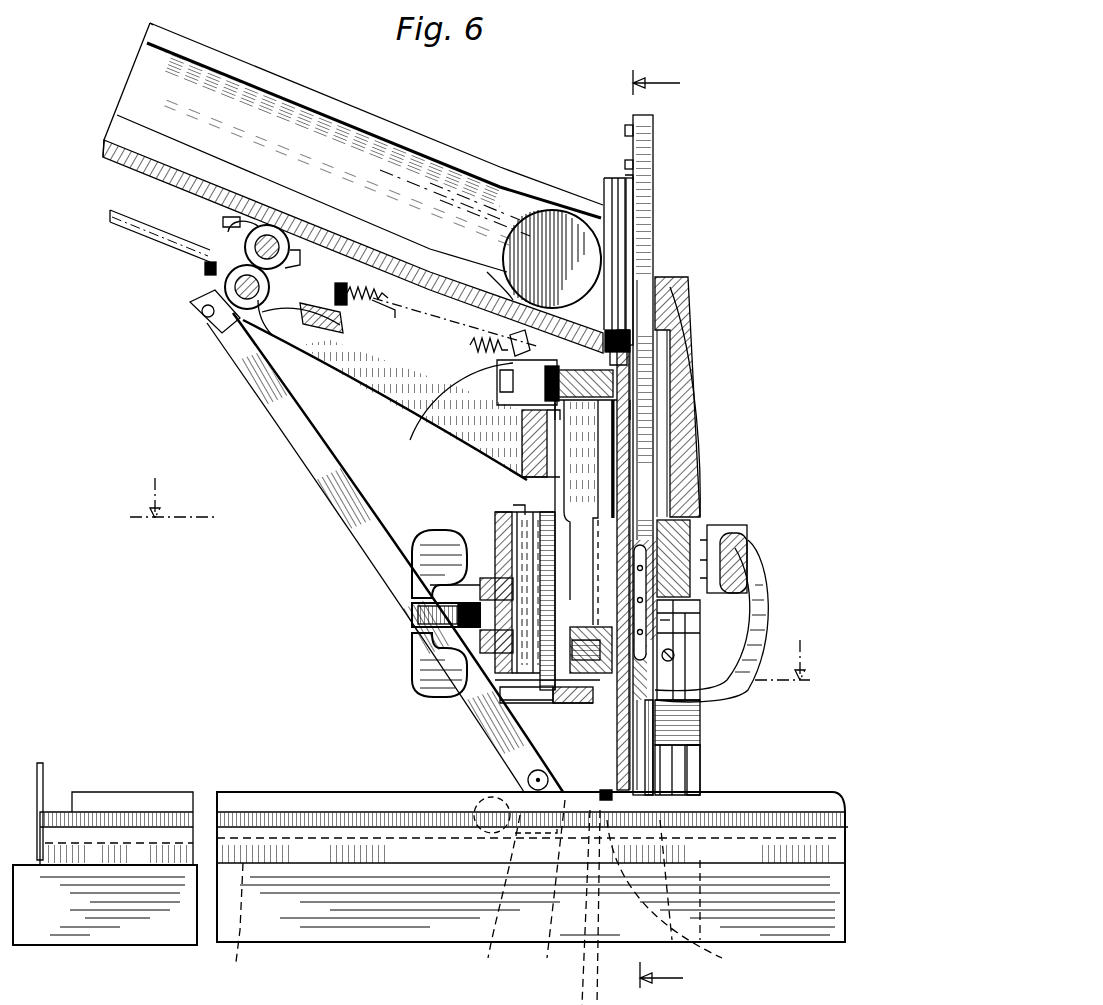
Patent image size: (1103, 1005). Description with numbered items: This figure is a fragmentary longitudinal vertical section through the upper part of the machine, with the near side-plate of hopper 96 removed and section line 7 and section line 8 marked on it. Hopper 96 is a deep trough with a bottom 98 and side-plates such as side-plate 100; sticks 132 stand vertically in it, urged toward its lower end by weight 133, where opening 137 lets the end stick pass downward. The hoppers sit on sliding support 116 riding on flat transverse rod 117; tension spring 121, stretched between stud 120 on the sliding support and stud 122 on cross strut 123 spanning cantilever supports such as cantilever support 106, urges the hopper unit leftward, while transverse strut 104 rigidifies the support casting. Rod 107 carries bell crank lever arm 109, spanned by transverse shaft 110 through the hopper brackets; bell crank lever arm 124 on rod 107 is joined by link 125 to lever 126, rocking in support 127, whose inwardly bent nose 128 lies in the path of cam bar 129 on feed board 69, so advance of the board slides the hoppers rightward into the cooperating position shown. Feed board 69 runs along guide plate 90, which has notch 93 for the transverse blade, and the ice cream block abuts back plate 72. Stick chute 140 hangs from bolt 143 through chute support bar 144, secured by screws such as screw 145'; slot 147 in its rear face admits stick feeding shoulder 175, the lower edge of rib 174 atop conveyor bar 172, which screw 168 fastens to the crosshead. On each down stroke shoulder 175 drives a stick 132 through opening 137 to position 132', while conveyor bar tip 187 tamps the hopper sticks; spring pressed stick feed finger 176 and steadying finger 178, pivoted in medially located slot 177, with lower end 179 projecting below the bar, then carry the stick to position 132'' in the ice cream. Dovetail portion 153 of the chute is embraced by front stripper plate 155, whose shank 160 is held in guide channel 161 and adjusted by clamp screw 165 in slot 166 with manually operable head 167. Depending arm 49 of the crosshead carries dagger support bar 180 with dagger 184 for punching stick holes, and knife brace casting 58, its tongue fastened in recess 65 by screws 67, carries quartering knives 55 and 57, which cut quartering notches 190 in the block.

The side-plate 100 is at (247, 88).
The stick containing hopper 96 is at (155, 55).
The hopper bottom 98 is at (118, 158).
The weight 133 is at (548, 212).
The flat transverse rod 117 is at (473, 279).
The transverse shaft 110 is at (235, 222).
The bell crank lever arm 109 is at (247, 241).
The rod 107 is at (238, 287).
The bell crank lever arm 124 is at (193, 310).
The link 125 is at (268, 407).
The dovetail portion 153 is at (528, 752).
The cantilever support 106 is at (385, 388).
The cross strut 123 is at (282, 340).
The stud 122 is at (345, 345).
The tension spring 121 is at (373, 362).
The sliding support 116 is at (510, 333).
The stud 120 is at (433, 405).
The bracket 145' is at (486, 402).
The transverse strut 104 is at (522, 445).
The chute support bar 144 is at (522, 470).
The vertical guide channel 161 is at (513, 507).
The stick 132 is at (593, 240).
The conveyor bar tip 187 is at (622, 178).
The rib 174 is at (630, 204).
The conveyor bar 172 is at (650, 215).
The screw 168 is at (690, 302).
The stick feeding shoulder 175 is at (628, 384).
The opening 137 is at (620, 360).
The slot 147 is at (640, 407).
The stick chute 140 is at (607, 437).
The bolt 143 is at (606, 418).
The stick (intermediate position) 132' is at (696, 560).
The depending arm 49 is at (600, 563).
The knife brace casting 58 is at (617, 578).
The stripper shank 160 is at (513, 677).
The clamp screw 165 is at (435, 690).
The slot 166 is at (412, 614).
The manually operable head 167 is at (440, 572).
The front stripper plate 155 is at (507, 700).
The dagger support bar 180 is at (580, 710).
The quartering knife 57 is at (603, 795).
The recess 65 is at (712, 523).
The screw 67 is at (712, 556).
The quartering notch 190 is at (740, 566).
The stick feed finger 176 is at (673, 603).
The slot 177 is at (687, 612).
The steadying finger 178 is at (655, 630).
The quartering knife 55 is at (700, 710).
The lower end 179 is at (665, 736).
The stick (inserted position) 132'' is at (723, 747).
The dagger 184 is at (690, 768).
The feed board 69 is at (233, 817).
The back plate 72 is at (44, 785).
The guide plate 90 is at (288, 812).
The support 127 is at (472, 812).
The cam bar 129 is at (250, 921).
The lever 126 is at (512, 897).
The inwardly bent nose 128 is at (569, 902).
The notch 93 is at (685, 901).
The section line 7- 7 is at (658, 513).
The section line 8- 8 is at (469, 579).